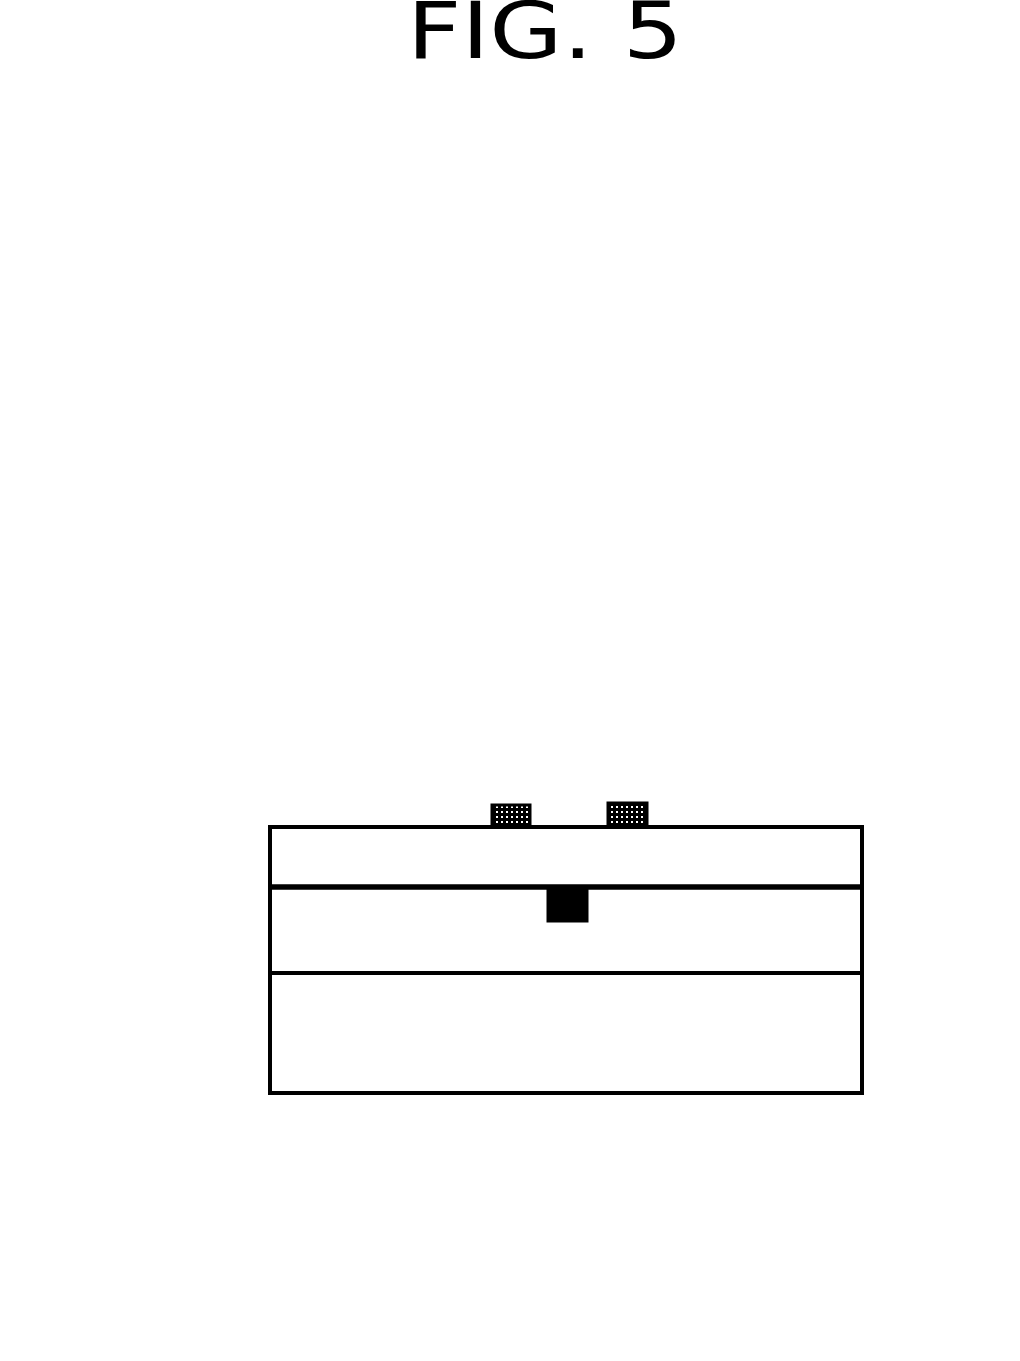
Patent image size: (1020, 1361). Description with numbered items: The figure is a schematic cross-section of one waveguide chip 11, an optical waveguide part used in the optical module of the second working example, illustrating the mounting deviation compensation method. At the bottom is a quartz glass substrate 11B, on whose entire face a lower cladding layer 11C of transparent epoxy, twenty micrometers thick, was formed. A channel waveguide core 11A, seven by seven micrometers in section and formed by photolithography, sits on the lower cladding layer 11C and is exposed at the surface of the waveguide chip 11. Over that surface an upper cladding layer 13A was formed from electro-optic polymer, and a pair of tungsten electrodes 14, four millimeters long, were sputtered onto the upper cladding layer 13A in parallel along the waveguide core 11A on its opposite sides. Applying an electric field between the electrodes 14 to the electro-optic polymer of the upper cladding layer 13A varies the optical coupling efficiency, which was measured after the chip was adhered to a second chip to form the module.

The waveguide chip 11 is at (425, 1150).
The channel waveguide core 11A is at (563, 887).
The quartz glass substrate 11B is at (318, 1032).
The lower cladding layer 11C is at (305, 947).
The upper cladding layer 13A is at (302, 852).
The electrodes 14 is at (493, 805).